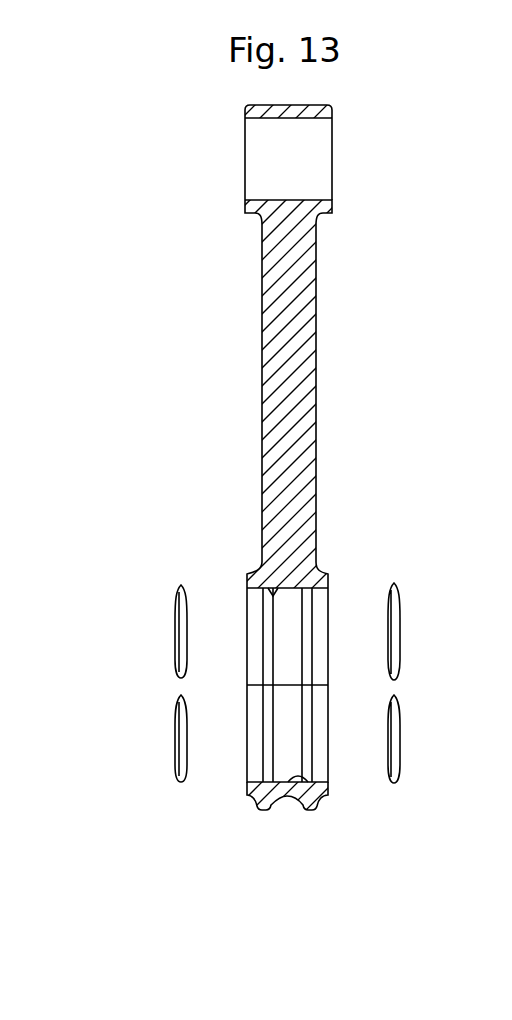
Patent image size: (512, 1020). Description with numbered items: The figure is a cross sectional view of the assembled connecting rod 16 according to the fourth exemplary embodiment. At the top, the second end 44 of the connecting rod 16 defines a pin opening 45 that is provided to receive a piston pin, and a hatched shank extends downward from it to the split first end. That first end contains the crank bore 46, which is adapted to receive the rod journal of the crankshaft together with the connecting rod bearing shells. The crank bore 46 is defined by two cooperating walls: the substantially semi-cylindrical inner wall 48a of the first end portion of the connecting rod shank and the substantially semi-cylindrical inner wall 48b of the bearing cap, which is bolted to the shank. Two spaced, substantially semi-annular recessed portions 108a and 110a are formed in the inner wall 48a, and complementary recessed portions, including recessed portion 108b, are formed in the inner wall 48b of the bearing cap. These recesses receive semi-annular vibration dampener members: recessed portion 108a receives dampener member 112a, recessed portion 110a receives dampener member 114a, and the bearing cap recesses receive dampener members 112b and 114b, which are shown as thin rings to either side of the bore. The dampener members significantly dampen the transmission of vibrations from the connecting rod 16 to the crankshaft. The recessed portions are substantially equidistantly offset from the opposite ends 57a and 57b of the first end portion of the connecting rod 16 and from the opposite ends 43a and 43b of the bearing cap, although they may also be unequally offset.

The connecting rod 16 is at (363, 393).
The second end 44 is at (247, 203).
The pin opening 45 is at (316, 157).
The crank bore 46 is at (328, 703).
The semi-cylindrical inner wall 48a is at (260, 574).
The semi-cylindrical inner wall 48b is at (308, 795).
The end of first end portion 57a is at (330, 590).
The end of first end portion 57b is at (247, 610).
The end of bearing cap 43a is at (328, 742).
The end of bearing cap 43b is at (247, 782).
The semi-annular recessed portion 108a is at (263, 642).
The semi-annular recessed portion 108b is at (263, 735).
The semi-annular recessed portion 110a is at (312, 623).
The semi-annular vibration dampener member 112a is at (175, 640).
The semi-annular vibration dampener member 112b is at (175, 735).
The semi-annular vibration dampener member 114a is at (400, 640).
The semi-annular vibration dampener member 114b is at (400, 735).